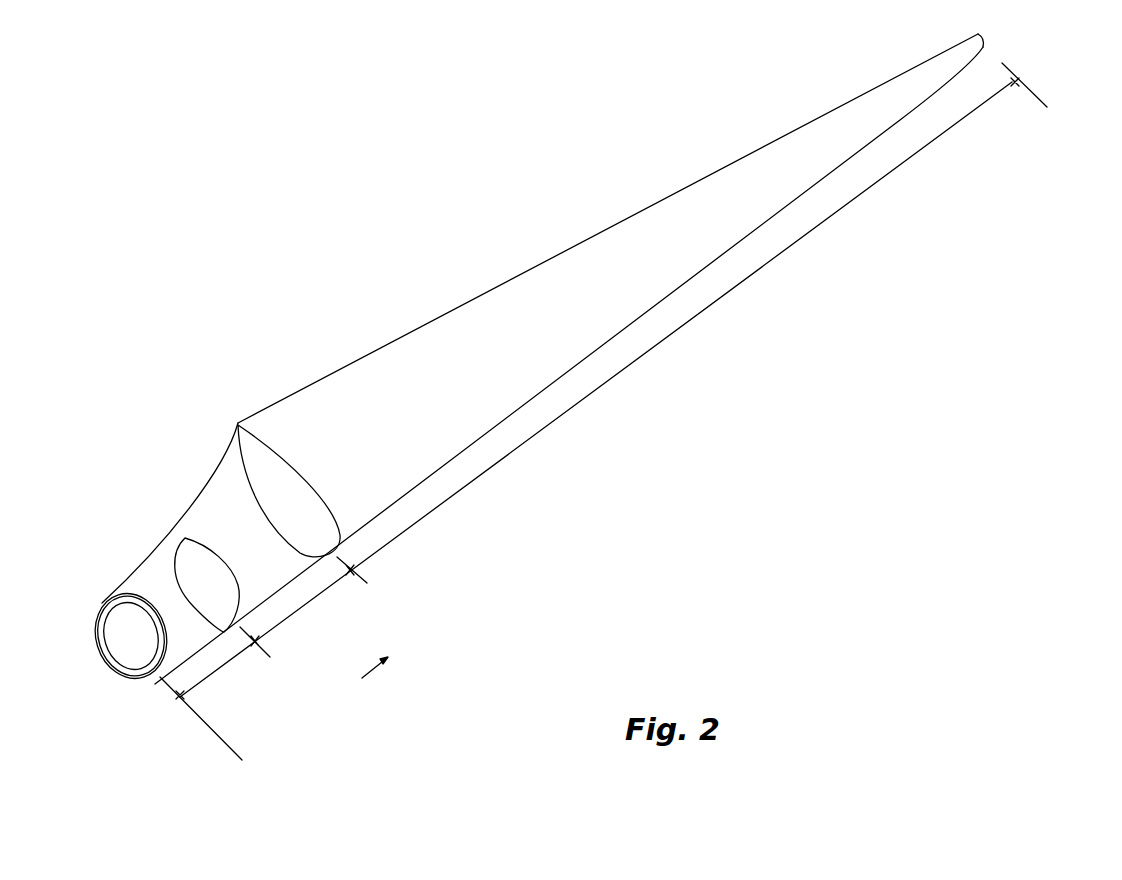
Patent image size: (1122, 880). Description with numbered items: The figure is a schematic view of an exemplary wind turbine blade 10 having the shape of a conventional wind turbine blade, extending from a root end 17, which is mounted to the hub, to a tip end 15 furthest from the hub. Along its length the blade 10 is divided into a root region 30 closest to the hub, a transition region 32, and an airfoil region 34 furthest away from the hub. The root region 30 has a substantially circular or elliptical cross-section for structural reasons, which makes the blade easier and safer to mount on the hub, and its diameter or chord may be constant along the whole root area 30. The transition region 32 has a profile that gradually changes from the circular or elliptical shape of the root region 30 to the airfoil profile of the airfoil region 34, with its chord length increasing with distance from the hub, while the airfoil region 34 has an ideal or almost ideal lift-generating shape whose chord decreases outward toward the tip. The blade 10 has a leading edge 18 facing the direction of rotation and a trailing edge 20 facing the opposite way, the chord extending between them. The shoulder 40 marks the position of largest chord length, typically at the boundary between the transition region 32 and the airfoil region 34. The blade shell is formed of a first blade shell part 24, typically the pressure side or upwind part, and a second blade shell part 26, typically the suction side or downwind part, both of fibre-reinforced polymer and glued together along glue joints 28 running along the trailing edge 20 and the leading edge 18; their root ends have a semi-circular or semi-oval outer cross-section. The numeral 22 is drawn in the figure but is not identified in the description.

The wind turbine blade 10 is at (588, 396).
The tip end 15 is at (982, 40).
The root end 17 is at (127, 630).
The leading edge 18 is at (715, 260).
The trailing edge 20 is at (600, 230).
The root end face 22 is at (118, 596).
The first blade shell part 24 is at (132, 594).
The second blade shell part 26 is at (133, 673).
The glue joints 28 is at (153, 682).
The root region 30 is at (220, 668).
The transition region 32 is at (305, 605).
The airfoil region 34 is at (617, 377).
The shoulder 40 is at (238, 423).